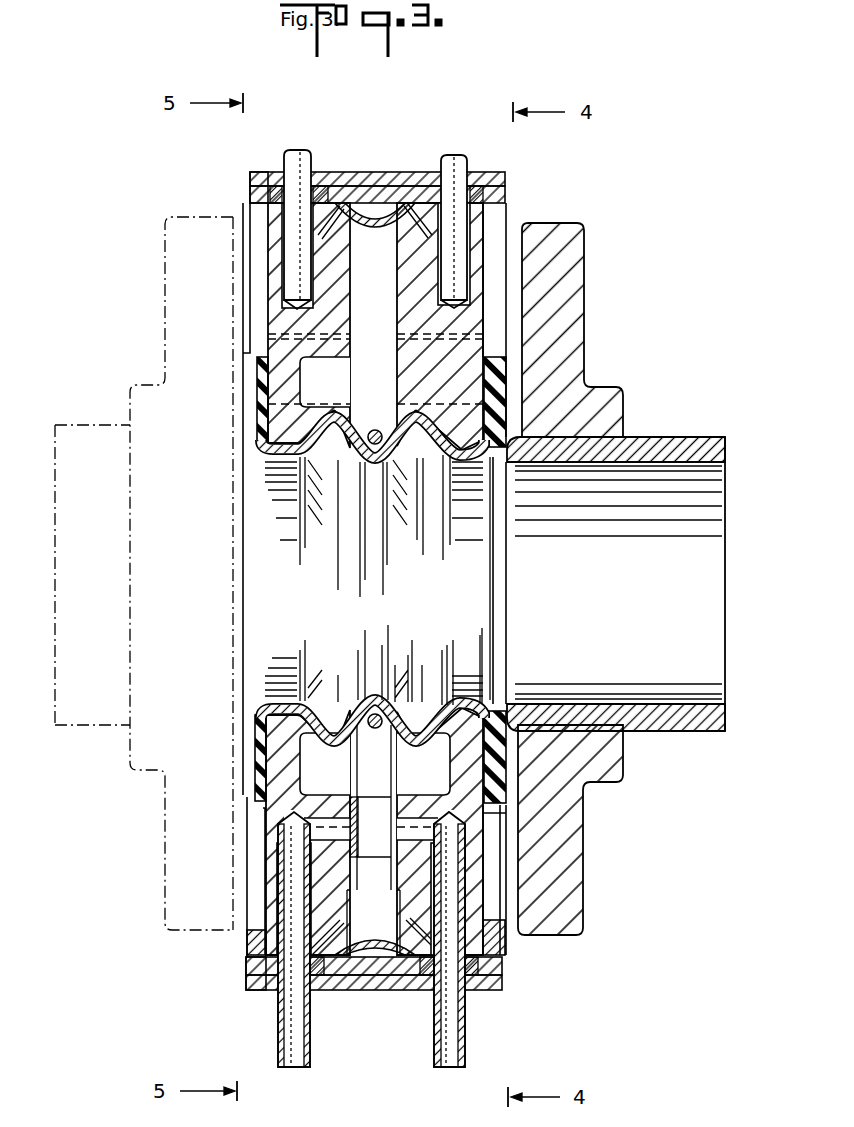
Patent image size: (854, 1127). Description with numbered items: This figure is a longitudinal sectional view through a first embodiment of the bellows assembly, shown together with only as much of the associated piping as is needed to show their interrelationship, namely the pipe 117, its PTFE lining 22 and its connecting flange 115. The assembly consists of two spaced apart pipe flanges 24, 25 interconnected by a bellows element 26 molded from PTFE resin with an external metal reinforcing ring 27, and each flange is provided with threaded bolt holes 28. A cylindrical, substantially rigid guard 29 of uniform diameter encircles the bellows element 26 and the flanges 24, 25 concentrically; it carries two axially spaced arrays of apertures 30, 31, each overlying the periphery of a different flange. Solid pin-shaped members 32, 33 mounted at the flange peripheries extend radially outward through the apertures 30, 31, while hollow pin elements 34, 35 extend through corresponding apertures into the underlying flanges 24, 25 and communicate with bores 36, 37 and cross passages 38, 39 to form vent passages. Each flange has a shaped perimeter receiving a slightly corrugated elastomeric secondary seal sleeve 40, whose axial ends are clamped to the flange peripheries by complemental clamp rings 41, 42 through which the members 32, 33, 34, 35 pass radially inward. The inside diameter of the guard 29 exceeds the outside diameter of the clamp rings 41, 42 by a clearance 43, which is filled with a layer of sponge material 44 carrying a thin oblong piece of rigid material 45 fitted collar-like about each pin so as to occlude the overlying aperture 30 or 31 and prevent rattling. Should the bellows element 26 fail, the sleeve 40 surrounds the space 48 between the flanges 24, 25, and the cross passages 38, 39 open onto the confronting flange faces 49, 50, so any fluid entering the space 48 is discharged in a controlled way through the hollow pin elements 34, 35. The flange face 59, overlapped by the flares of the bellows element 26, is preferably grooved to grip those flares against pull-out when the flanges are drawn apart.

The lining 22 is at (713, 473).
The pipe flange 24 is at (268, 298).
The pipe flange 25 is at (483, 302).
The bellows element 26 is at (468, 462).
The external metal reinforcing ring 27 is at (375, 430).
The threaded bolt holes 28 is at (257, 363).
The guard 29 is at (367, 173).
The apertures 30 is at (262, 172).
The apertures 31 is at (472, 175).
The pin-shaped member 32 is at (307, 150).
The pin-shaped member 33 is at (456, 155).
The hollow pin element 34 is at (277, 1055).
The hollow pin element 35 is at (466, 1052).
The bore 36 is at (283, 838).
The bore 37 is at (453, 841).
The cross passage 38 is at (323, 818).
The cross passage 39 is at (420, 818).
The secondary seal sleeve 40 is at (371, 984).
The clamp ring 41 is at (250, 940).
The clamp ring 42 is at (500, 948).
The clearance 43 is at (508, 195).
The layer of sponge material 44 is at (360, 172).
The piece of rigid material 45 is at (322, 173).
The space 48 is at (370, 807).
The face 49 is at (374, 826).
The face 50 is at (400, 830).
The face 59 is at (265, 812).
The connecting flange 115 is at (585, 243).
The pipe 117 is at (706, 437).